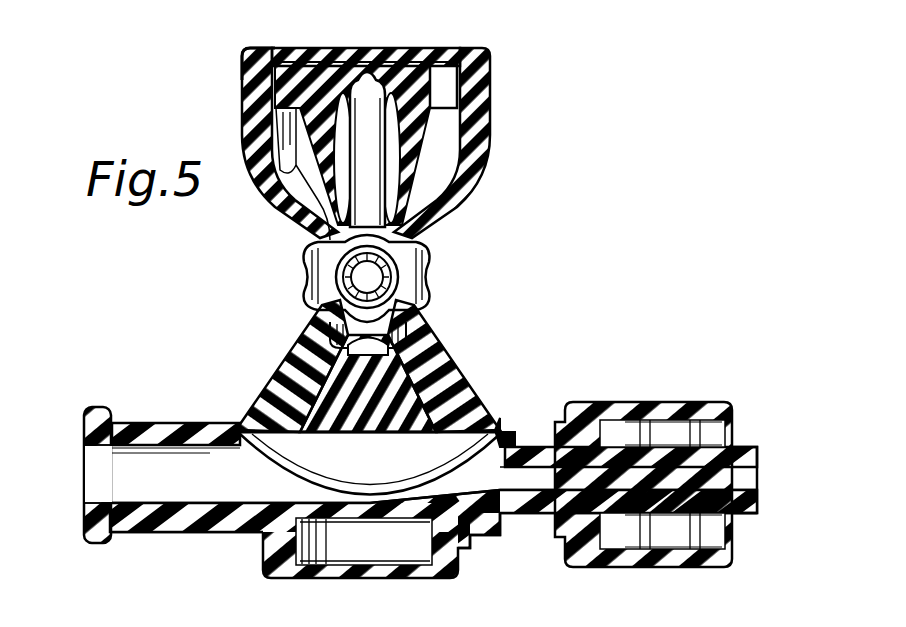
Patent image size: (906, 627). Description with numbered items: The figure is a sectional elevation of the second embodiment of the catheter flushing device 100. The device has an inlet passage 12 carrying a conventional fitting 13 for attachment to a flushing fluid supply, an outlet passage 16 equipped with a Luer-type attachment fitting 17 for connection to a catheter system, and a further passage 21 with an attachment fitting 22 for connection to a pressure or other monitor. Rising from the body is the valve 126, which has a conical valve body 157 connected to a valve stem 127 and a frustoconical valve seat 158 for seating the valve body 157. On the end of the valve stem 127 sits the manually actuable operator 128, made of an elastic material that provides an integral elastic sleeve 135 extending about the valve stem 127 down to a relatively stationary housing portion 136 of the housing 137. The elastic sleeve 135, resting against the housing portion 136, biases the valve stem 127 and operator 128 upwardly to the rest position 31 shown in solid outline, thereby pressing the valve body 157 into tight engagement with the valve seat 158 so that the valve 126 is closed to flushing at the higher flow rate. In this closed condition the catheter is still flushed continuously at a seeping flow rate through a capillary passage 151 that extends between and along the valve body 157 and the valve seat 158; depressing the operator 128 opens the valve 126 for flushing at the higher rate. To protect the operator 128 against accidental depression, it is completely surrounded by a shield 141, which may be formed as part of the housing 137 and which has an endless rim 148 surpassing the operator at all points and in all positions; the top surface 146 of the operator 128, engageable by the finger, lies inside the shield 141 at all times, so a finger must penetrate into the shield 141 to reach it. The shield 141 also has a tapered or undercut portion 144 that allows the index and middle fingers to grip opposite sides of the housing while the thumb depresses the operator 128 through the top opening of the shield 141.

The inlet passage 12 is at (392, 278).
The fitting 13 is at (417, 296).
The outlet passage 16 is at (742, 452).
The attachment fitting 17 is at (642, 404).
The passage 21 is at (162, 422).
The attachment fitting 22 is at (90, 405).
The rest position 31 is at (328, 60).
The catheter flushing device 100 is at (371, 373).
The valve 126 is at (450, 364).
The valve stem 127 is at (375, 172).
The operator 128 is at (445, 64).
The elastic sleeve 135 is at (300, 165).
The housing portion 136 is at (395, 226).
The housing 137 is at (430, 337).
The shield 141 is at (240, 100).
The tapered portion 144 is at (298, 210).
The top surface 146 is at (400, 62).
The rim 148 is at (256, 56).
The capillary passage 151 is at (485, 412).
The valve body 157 is at (363, 412).
The valve seat 158 is at (263, 390).